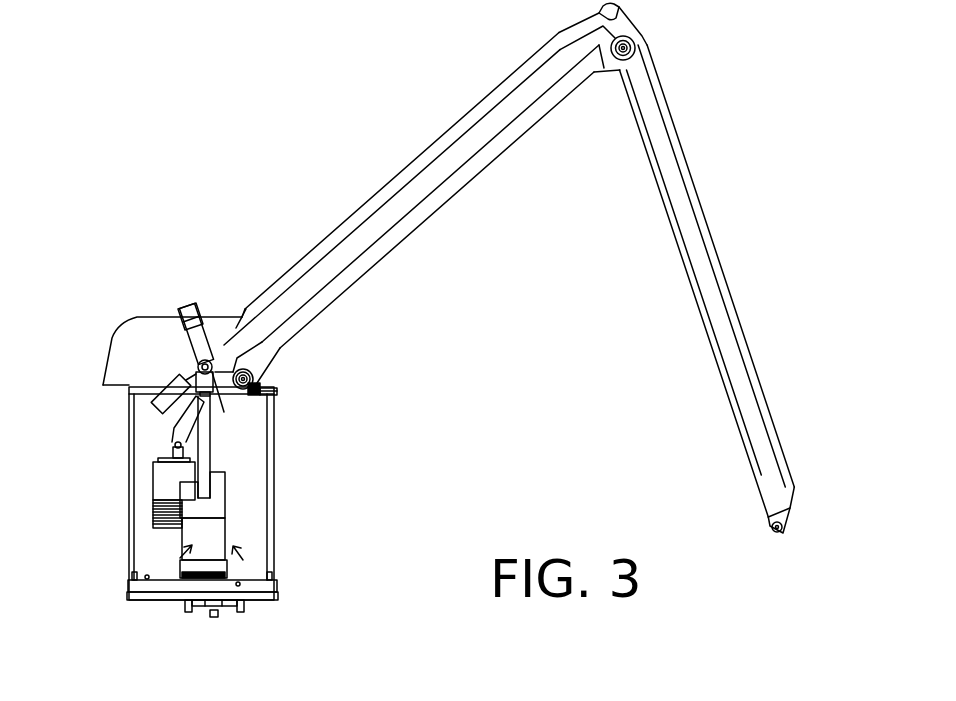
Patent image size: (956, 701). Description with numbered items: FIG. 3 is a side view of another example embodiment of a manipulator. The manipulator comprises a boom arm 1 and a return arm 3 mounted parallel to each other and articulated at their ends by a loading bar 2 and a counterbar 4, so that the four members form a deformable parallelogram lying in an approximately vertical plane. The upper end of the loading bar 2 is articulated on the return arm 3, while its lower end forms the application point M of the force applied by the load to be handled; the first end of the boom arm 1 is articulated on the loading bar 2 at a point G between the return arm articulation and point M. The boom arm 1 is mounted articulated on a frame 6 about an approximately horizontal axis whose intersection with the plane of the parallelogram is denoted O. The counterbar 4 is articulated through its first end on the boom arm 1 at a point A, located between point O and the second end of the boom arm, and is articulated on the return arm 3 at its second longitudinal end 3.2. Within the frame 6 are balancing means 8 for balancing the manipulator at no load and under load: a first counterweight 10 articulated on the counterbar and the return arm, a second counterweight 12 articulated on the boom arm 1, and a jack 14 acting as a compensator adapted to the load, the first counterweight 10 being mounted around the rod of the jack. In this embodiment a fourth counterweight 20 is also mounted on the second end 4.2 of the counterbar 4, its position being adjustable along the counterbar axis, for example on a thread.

The boom arm 1 is at (443, 197).
The loading bar 2 is at (705, 247).
The return arm 3 is at (480, 127).
The articulation point G is at (636, 46).
The application point M is at (782, 535).
The rotation axis O is at (255, 381).
The counterbar 4 is at (272, 398).
The frame 6 is at (120, 461).
The first counterweight 10 is at (222, 495).
The second counterweight 12 is at (165, 492).
The jack 14 is at (185, 553).
The balancing means 8 is at (236, 550).
The second longitudinal end of the return arm 3.2 is at (195, 374).
The fourth counterweight 20 is at (180, 307).
The second end of the counterbar 4.2 is at (203, 308).
The articulation point A is at (220, 400).